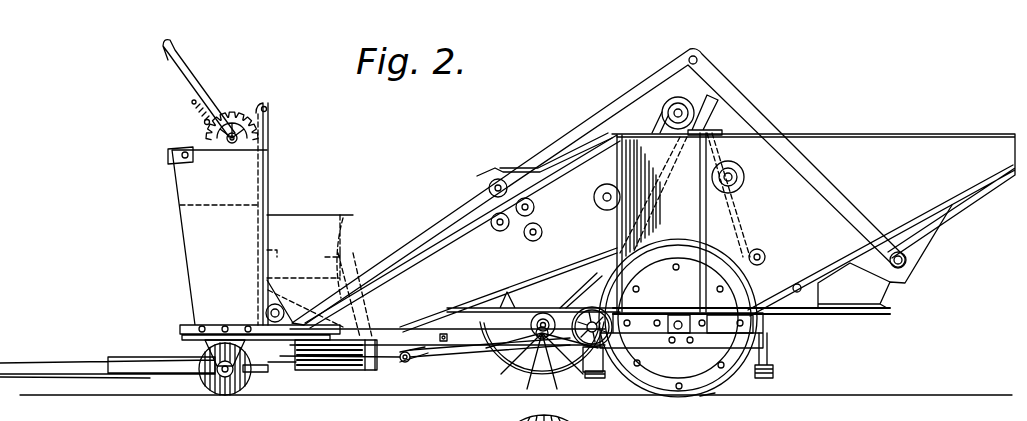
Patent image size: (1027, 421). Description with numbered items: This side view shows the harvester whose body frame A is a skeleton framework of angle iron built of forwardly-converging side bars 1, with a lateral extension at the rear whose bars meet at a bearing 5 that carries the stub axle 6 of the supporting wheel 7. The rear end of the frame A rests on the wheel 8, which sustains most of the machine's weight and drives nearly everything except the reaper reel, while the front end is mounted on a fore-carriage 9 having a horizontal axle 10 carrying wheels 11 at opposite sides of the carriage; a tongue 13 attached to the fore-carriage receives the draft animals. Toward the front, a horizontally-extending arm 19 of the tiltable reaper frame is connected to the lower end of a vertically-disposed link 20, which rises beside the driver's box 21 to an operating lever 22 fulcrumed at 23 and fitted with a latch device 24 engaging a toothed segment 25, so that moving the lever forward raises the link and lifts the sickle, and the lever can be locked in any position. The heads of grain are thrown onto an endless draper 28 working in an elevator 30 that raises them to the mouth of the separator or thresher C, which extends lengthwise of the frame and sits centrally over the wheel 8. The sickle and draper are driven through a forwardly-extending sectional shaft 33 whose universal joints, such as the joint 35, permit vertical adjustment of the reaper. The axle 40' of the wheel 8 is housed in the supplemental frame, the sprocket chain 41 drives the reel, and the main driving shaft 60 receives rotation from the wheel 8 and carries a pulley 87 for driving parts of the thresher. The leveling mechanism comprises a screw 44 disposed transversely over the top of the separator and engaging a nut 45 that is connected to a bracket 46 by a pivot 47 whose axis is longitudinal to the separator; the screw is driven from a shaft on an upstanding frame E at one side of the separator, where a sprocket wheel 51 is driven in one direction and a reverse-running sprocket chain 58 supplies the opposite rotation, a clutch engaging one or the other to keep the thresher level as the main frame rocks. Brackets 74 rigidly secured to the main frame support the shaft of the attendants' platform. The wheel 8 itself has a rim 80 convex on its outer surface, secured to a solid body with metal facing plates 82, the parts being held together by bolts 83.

The side bars 1 is at (388, 331).
The bearing 5 is at (537, 337).
The stub axle 6 is at (545, 314).
The supporting wheel 7 is at (500, 390).
The wheel 8 is at (678, 318).
The fore-carriage 9 is at (225, 353).
The horizontal axle 10 is at (236, 372).
The wheels 11 is at (213, 393).
The tongue 13 is at (67, 366).
The arm 19 is at (282, 364).
The link 20 is at (269, 196).
The driver's box 21 is at (254, 243).
The operating lever 22 is at (197, 79).
The fulcrum 23 is at (232, 144).
The latch device 24 is at (205, 122).
The toothed segment 25 is at (238, 113).
The draper 28 is at (330, 368).
The elevator 30 is at (365, 358).
The shaft 33 is at (437, 353).
The universal joint 35 is at (405, 362).
The axle 40' is at (677, 305).
The sprocket chain 41 is at (730, 324).
The leveling screw 44 is at (675, 130).
The nut 45 is at (680, 98).
The bracket 46 is at (717, 138).
The pivot 47 is at (692, 162).
The sprocket wheel 51 is at (658, 113).
The sprocket chain 58 is at (590, 277).
The main driving shaft 60 is at (585, 352).
The brackets 74 is at (598, 378).
The rim 80 is at (570, 418).
The facing plates 82 is at (712, 394).
The bolts 83 is at (700, 366).
The pulley 87 is at (603, 332).
The body frame A is at (374, 372).
The separator C is at (505, 232).
The upstanding frame E is at (718, 120).